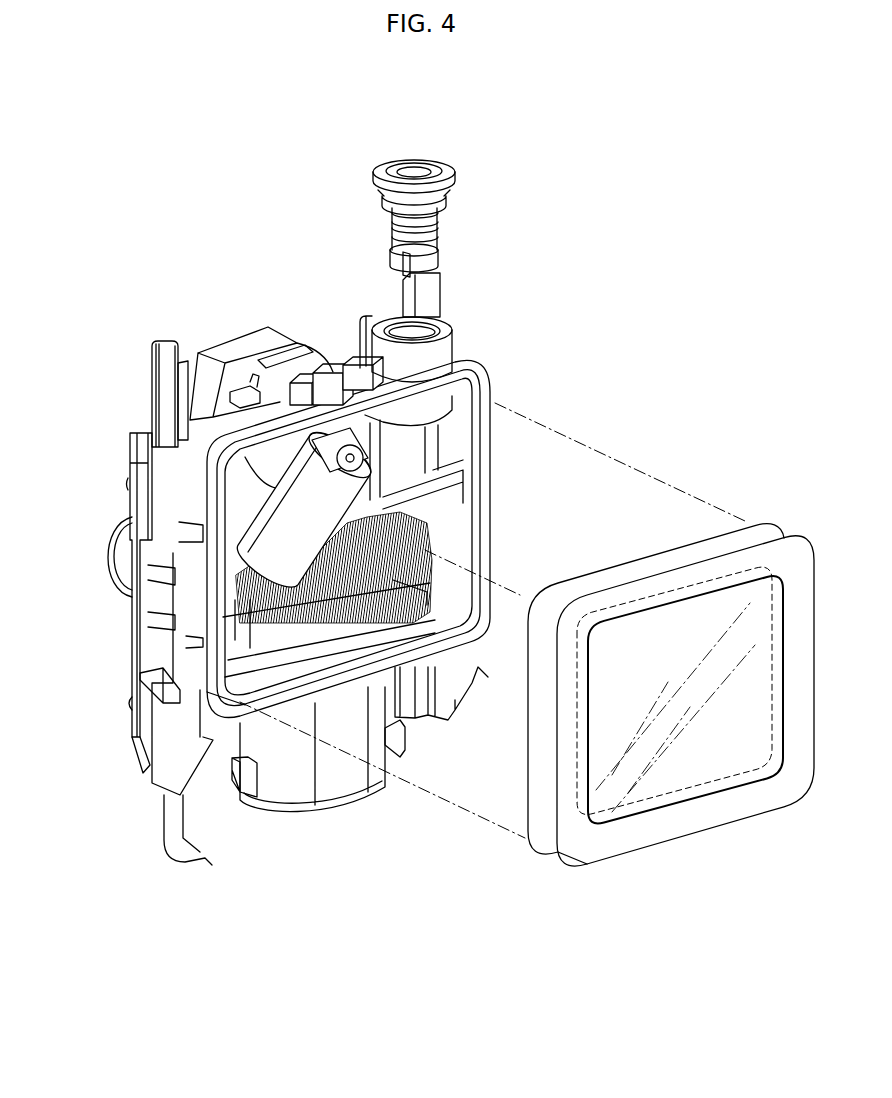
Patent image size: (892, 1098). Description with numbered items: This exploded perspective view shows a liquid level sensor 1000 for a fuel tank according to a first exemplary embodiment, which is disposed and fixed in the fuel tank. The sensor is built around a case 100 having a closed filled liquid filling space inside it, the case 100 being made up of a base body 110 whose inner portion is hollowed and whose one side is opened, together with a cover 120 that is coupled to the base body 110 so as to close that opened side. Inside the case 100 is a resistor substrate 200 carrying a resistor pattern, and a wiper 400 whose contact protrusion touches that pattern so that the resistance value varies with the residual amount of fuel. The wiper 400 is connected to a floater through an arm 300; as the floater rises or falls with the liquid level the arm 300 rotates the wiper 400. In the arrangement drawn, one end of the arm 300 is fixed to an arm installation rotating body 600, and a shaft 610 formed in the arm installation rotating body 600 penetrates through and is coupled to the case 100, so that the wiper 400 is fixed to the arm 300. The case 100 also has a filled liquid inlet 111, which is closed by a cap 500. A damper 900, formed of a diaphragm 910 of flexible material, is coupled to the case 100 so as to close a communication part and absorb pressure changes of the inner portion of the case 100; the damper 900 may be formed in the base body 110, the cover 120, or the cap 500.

The liquid level sensor 1000 is at (243, 172).
The case 100 is at (654, 368).
The base body 110 is at (492, 390).
The filled liquid inlet 111 is at (442, 320).
The cover 120 is at (720, 540).
The resistor substrate 200 is at (232, 586).
The arm 300 is at (163, 828).
The wiper 400 is at (295, 540).
The cap 500 is at (443, 162).
The arm installation rotating body 600 is at (250, 343).
The shaft 610 is at (363, 455).
The damper 900 is at (657, 813).
The diaphragm 910 is at (680, 695).